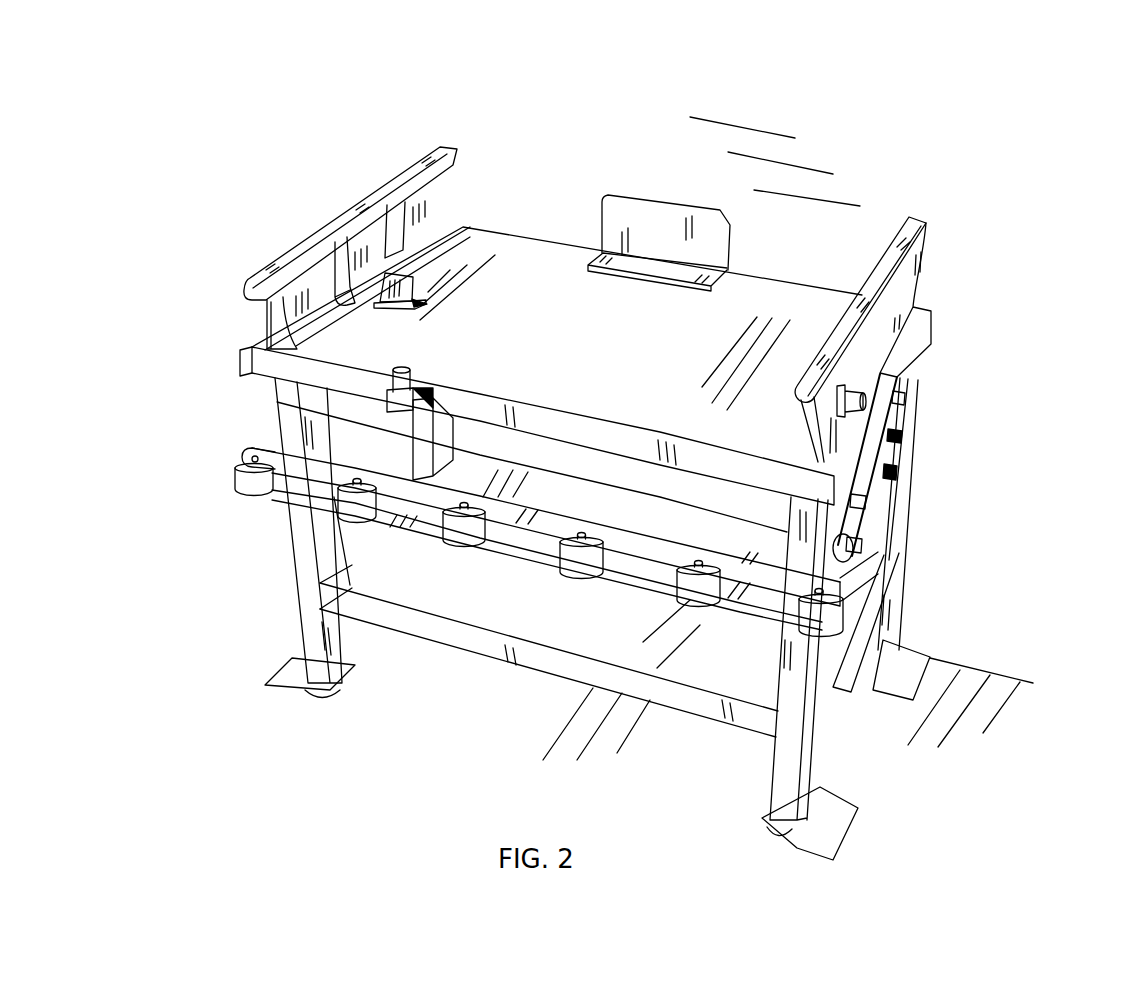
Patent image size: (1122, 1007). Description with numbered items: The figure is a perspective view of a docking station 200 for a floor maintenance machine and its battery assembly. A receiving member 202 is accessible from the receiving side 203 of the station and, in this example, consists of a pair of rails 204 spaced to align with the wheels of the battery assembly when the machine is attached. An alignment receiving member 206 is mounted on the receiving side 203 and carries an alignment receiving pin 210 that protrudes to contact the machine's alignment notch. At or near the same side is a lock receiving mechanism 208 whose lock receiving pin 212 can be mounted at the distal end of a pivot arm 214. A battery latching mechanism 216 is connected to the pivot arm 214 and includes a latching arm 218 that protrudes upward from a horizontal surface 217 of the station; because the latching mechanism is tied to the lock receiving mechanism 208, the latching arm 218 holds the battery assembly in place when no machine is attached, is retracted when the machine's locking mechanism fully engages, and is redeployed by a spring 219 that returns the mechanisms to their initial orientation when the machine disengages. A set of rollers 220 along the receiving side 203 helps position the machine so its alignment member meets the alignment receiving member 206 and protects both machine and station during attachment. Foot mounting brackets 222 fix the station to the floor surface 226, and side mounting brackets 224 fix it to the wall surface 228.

The docking station 200 is at (637, 72).
The receiving member 202 is at (937, 140).
The receiving side 203 is at (484, 716).
The rails 204 is at (911, 217).
The alignment receiving member 206 is at (368, 367).
The lock receiving mechanism 208 is at (857, 372).
The alignment receiving pin 210 is at (390, 386).
The lock receiving pin 212 is at (865, 392).
The pivot arm 214 is at (856, 462).
The battery latching mechanism 216 is at (895, 503).
The horizontal surface 217 is at (470, 237).
The latching arm 218 is at (403, 265).
The spring 219 is at (880, 497).
The rollers 220 is at (350, 507).
The foot mounting brackets 222 is at (833, 831).
The side mounting brackets 224 is at (690, 205).
The floor surface 226 is at (993, 695).
The wall surface 228 is at (775, 147).